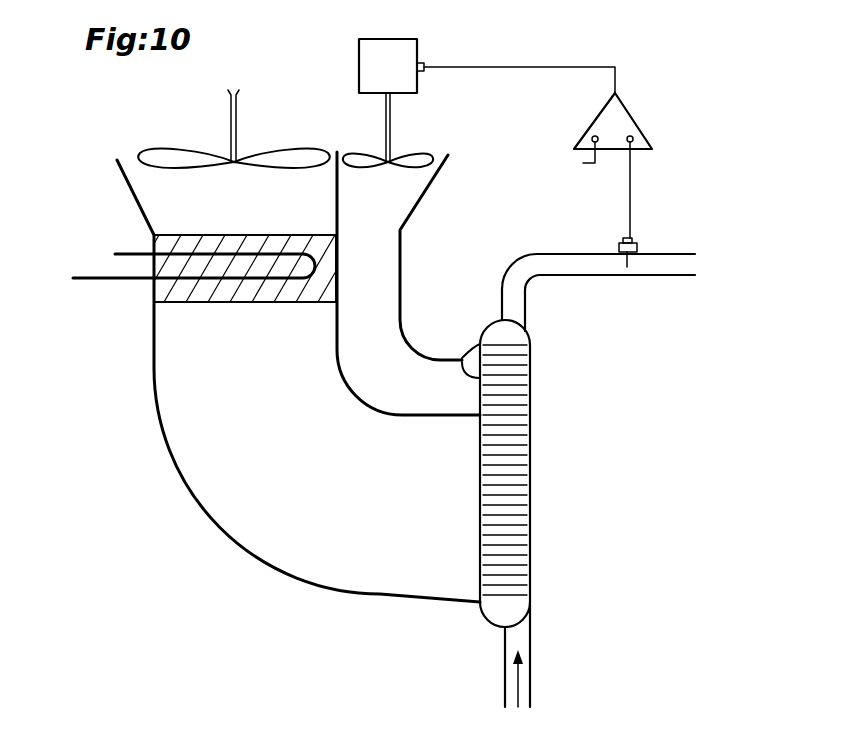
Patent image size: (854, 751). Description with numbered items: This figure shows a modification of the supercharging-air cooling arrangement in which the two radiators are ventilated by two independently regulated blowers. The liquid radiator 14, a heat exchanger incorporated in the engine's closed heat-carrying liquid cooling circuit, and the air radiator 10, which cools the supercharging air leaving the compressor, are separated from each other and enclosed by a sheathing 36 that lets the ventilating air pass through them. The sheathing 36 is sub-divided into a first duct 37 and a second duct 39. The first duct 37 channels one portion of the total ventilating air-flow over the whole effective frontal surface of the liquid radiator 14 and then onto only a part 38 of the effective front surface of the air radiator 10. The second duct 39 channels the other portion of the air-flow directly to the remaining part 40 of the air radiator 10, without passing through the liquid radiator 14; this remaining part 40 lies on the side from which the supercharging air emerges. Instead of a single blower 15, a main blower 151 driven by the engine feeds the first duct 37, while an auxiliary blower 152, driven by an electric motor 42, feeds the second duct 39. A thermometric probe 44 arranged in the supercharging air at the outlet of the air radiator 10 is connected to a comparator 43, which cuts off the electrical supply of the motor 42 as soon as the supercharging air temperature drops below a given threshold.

The heat exchanger 10 is at (537, 469).
The heat exchanger 14 is at (148, 294).
The blower 15 is at (285, 128).
The main blower 151 is at (229, 116).
The auxiliary blower 152 is at (384, 120).
The sheathing 36 is at (240, 542).
The first duct 37 is at (250, 413).
The part of the effective front surface of the air radiator 38 is at (478, 522).
The second duct 39 is at (373, 308).
The remaining part of the air radiator 40 is at (463, 356).
The electric motor 42 is at (362, 50).
The comparator 43 is at (625, 122).
The thermometric probe 44 is at (638, 244).